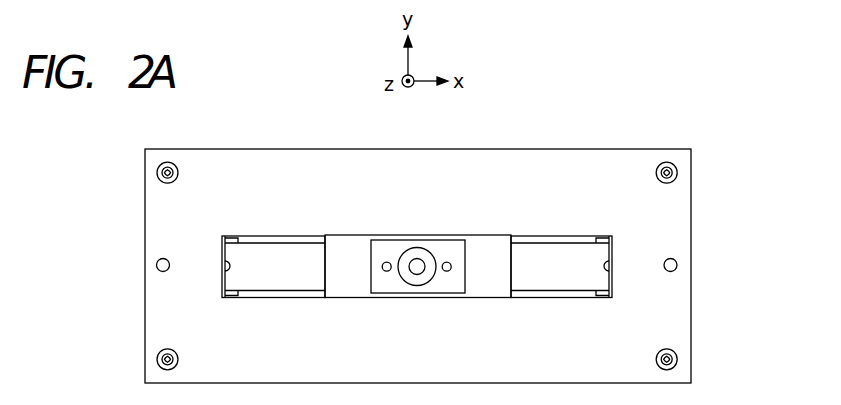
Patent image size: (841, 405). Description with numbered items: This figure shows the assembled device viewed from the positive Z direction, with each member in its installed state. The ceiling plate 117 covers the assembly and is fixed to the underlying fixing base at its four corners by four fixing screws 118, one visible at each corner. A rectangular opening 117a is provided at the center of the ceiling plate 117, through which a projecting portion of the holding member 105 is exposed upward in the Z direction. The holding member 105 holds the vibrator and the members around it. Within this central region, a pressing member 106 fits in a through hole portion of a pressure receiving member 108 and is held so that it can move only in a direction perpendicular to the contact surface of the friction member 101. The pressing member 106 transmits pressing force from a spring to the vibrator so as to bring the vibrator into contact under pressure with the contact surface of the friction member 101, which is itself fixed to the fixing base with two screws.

The ceiling plate 117 is at (634, 148).
The rectangular opening 117a is at (258, 236).
The fixing screw 118 is at (157, 173).
The friction member 101 is at (582, 246).
The holding member 105 is at (502, 237).
The pressure receiving member 108 is at (427, 250).
The pressing member 106 is at (410, 260).